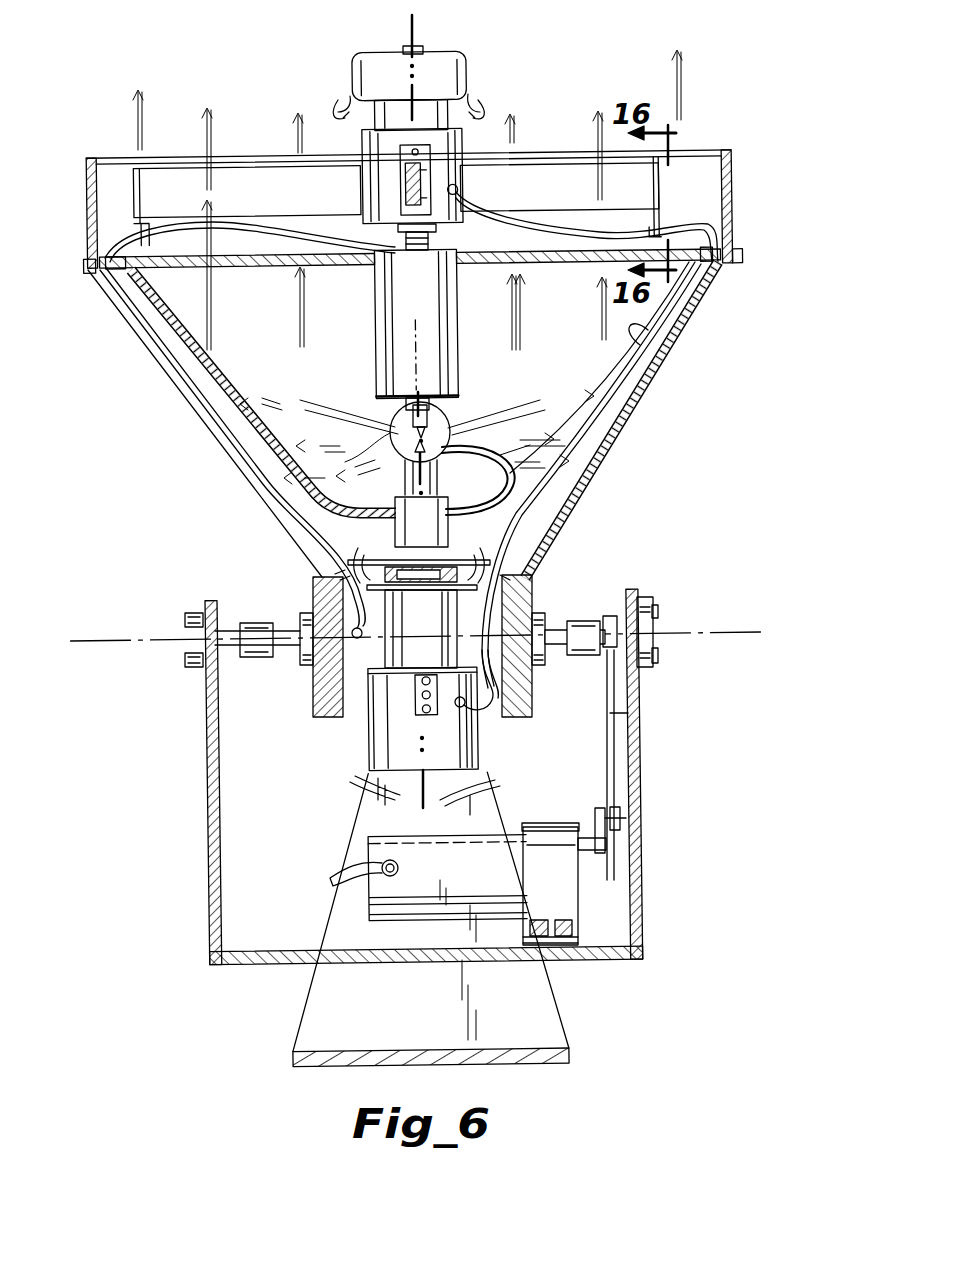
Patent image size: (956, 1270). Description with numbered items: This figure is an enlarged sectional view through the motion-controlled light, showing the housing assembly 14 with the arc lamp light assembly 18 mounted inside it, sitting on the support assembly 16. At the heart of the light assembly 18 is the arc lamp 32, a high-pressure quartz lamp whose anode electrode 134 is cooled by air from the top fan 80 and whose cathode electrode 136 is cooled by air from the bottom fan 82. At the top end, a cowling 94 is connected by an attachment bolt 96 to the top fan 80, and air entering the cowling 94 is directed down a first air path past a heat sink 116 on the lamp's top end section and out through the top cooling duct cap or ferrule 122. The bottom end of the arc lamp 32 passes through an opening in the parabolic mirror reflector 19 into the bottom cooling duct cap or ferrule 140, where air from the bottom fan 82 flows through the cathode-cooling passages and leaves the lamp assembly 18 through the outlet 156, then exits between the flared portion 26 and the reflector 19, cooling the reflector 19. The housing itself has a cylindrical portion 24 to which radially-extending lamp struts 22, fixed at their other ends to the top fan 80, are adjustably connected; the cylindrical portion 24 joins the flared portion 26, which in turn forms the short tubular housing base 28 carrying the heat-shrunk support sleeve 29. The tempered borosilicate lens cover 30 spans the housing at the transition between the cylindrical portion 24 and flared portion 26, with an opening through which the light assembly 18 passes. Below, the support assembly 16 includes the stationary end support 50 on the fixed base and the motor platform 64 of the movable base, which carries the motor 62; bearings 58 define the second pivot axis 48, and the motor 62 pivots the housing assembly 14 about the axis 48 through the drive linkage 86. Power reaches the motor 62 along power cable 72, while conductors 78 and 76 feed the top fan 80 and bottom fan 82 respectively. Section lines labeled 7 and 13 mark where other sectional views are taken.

The section line 7- 7 is at (423, 23).
The section line 13- 13 is at (410, 466).
The housing assembly 14 is at (140, 400).
The support assembly 16 is at (676, 703).
The arc lamp light assembly 18 is at (522, 335).
The parabolic mirror reflector 19 is at (655, 365).
The lamp struts 22 is at (300, 209).
The cylindrical portion 24 is at (730, 195).
The flared portion 26 is at (617, 447).
The housing base 28 is at (345, 718).
The support sleeve 29 is at (533, 590).
The lens cover 30 is at (278, 266).
The arc lamp 32 is at (442, 425).
The axis 48 is at (722, 636).
The stationary end support 50 is at (335, 1005).
The bearings 58 is at (195, 612).
The motor 62 is at (555, 828).
The motor platform 64 is at (600, 955).
The power cable 72 is at (335, 875).
The conductor 76 is at (512, 667).
The conductor 78 is at (293, 520).
The top fan 80 is at (455, 145).
The bottom fan 82 is at (470, 738).
The drive linkage 86 is at (612, 713).
The cowling 94 is at (455, 77).
The attachment bolt 96 is at (425, 48).
The heat sink 116 is at (430, 240).
The top cooling duct cap or ferrule 122 is at (445, 298).
The anode electrode 134 is at (398, 446).
The cathode electrode 136 is at (512, 533).
The bottom cooling duct cap or ferrule 140 is at (392, 655).
The outlet 156 is at (388, 558).